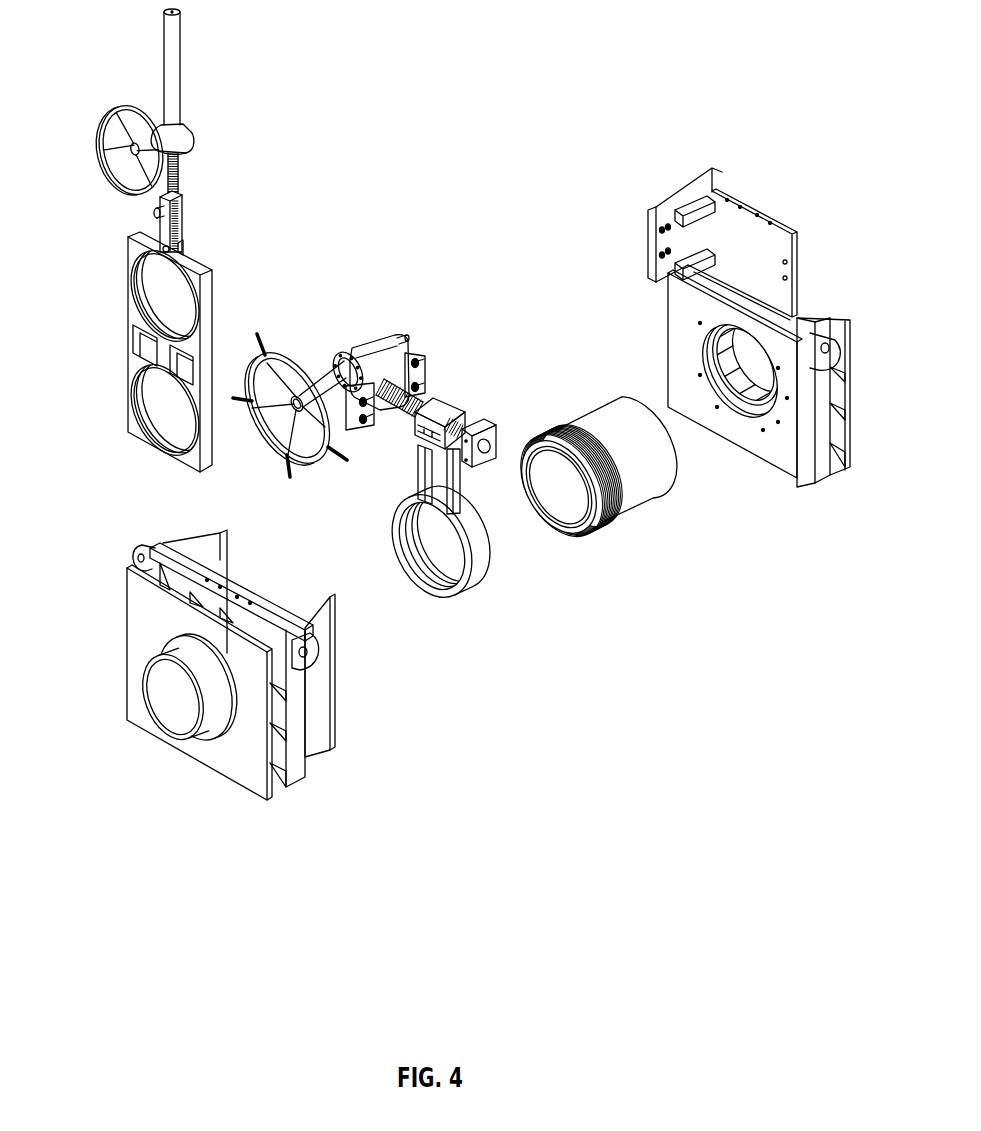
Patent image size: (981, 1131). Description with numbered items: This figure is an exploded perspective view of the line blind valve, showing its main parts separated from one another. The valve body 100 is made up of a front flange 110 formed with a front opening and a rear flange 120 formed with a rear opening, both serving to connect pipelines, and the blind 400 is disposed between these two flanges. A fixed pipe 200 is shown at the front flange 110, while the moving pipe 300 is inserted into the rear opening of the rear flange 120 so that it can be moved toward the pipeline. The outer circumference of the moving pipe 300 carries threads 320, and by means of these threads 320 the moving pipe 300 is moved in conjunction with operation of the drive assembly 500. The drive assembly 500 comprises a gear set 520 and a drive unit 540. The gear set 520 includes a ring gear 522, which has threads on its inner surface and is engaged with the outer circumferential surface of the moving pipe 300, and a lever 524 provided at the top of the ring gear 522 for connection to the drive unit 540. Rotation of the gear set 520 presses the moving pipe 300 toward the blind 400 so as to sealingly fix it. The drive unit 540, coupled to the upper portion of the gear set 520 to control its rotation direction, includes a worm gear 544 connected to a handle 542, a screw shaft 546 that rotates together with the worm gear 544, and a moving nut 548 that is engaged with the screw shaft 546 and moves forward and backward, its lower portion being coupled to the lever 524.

The valve body 100 is at (652, 887).
The front flange 110 is at (317, 747).
The rear flange 120 is at (818, 477).
The fixed pipe 200 is at (212, 738).
The moving pipe 300 is at (632, 500).
The threads 320 is at (601, 527).
The blind 400 is at (132, 366).
The drive assembly 500 is at (557, 218).
The gear set 520 is at (580, 255).
The ring gear 522 is at (440, 578).
The lever 524 is at (452, 397).
The drive unit 540 is at (433, 238).
The handle 542 is at (280, 352).
The worm gear 544 is at (374, 346).
The screw shaft 546 is at (408, 355).
The moving nut 548 is at (424, 385).